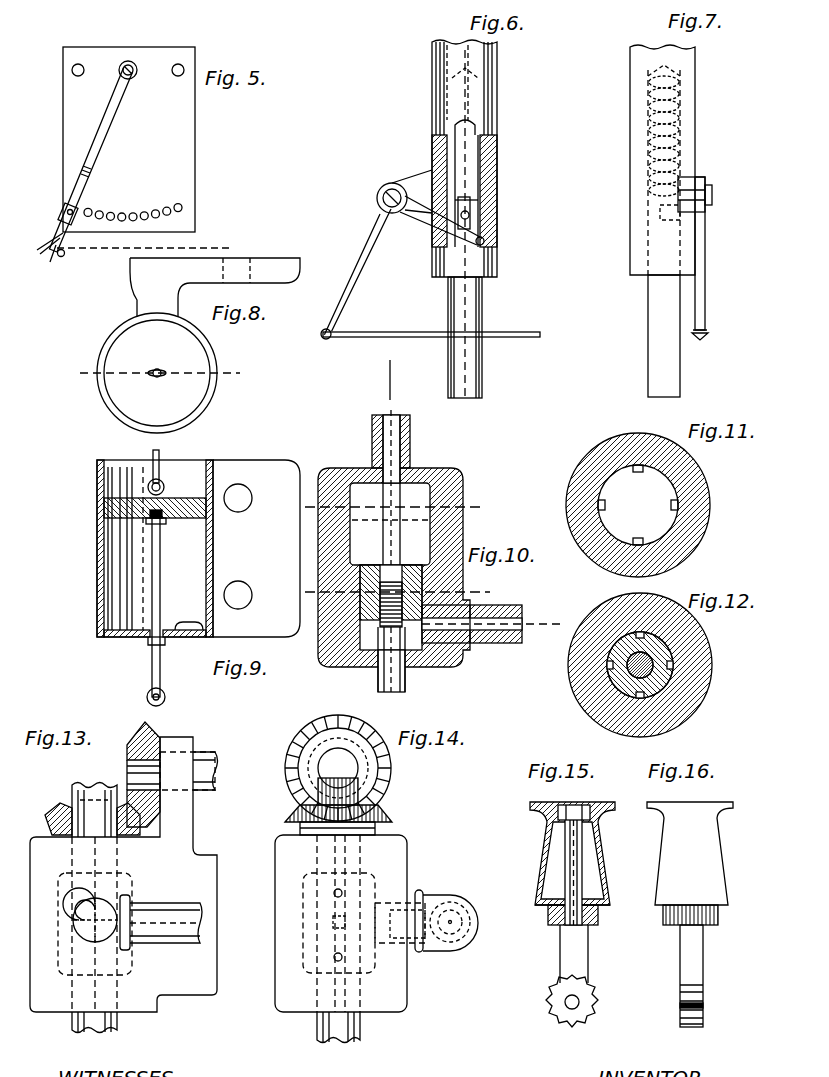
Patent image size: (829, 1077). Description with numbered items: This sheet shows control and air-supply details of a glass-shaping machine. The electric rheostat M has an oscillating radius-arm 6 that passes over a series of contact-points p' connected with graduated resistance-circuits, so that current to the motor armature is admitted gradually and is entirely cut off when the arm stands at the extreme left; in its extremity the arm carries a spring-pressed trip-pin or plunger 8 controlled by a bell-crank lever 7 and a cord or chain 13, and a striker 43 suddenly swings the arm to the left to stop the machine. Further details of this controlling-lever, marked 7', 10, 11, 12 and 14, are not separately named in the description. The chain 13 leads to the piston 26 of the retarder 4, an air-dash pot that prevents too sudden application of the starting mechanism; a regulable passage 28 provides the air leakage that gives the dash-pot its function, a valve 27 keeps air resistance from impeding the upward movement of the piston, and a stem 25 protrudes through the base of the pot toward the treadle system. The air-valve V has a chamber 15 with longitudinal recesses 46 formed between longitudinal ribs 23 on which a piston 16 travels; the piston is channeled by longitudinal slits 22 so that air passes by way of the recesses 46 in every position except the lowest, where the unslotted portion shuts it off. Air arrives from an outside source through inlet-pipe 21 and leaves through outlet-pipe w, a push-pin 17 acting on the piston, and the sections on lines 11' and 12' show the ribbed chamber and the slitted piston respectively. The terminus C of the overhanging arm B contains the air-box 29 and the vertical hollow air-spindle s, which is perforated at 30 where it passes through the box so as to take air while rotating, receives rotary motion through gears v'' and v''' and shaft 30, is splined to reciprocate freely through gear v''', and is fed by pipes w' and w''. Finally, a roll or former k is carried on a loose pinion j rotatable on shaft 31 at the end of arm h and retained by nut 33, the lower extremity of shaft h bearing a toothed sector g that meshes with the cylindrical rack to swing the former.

In FIG. 8, the retarder 4 is at (190, 345).
In FIG. 9, the retarder 4 is at (198, 552).
In FIG. 5, the radius-arm 6 is at (98, 133).
In FIG. 5, the bell-crank lever 7 is at (46, 232).
In FIG. 6, the bell-crank lever 7 is at (376, 254).
In FIG. 7, the bell-crank lever 7 is at (709, 258).
In FIG. 6, the link 7' is at (442, 220).
In FIG. 5, the trip-pin or plunger 8 is at (52, 255).
In FIG. 6, the trip-pin or plunger 8 is at (453, 221).
In FIG. 7, the trip-pin or plunger 8 is at (659, 221).
In FIG. 6, the pin 10 is at (485, 230).
In FIG. 6, the block 11 is at (491, 202).
In FIG. 7, the block 11 is at (702, 201).
In FIG. 7, the spring 12 is at (685, 130).
In FIG. 5, the cord or chain 13 is at (161, 239).
In FIG. 6, the cord or chain 13 is at (431, 321).
In FIG. 9, the cord or chain 13 is at (168, 460).
In FIG. 5, the tube 14 is at (72, 214).
In FIG. 6, the tube 14 is at (480, 158).
In FIG. 10, the chamber 15 is at (405, 507).
In FIG. 11, the chamber 15 is at (638, 505).
In FIG. 10, the piston 16 is at (402, 598).
In FIG. 12, the piston 16 is at (620, 680).
In FIG. 10, the push-pin 17 is at (410, 659).
In FIG. 10, the inlet-pipe 21 is at (491, 636).
In FIG. 12, the longitudinal slits 22 is at (668, 668).
In FIG. 10, the longitudinal ribs 23 is at (391, 585).
In FIG. 11, the longitudinal ribs 23 is at (614, 505).
In FIG. 9, the stem 25 is at (142, 612).
In FIG. 9, the piston 26 is at (97, 514).
In FIG. 9, the valve 27 is at (189, 615).
In FIG. 9, the passage 28 is at (175, 486).
In FIG. 13, the air-box 29 is at (62, 950).
In FIG. 14, the air-box 29 is at (315, 923).
In FIG. 13, the shaft 30 is at (20, 884).
In FIG. 14, the shaft 30 is at (334, 893).
In FIG. 15, the shaft 31 is at (582, 845).
In FIG. 15, the nut 33 is at (580, 802).
In FIG. 5, the striker 43 is at (64, 256).
In FIG. 10, the longitudinal recesses 46 is at (390, 505).
In FIG. 11, the longitudinal recesses 46 is at (638, 505).
In FIG. 10, the section line 11' is at (403, 514).
In FIG. 10, the section line 12' is at (405, 589).
In FIG. 5, the electric rheostat M is at (142, 139).
In FIG. 5, the contact-points p' is at (133, 203).
In FIG. 10, the air-valve V is at (403, 567).
In FIG. 11, the air-valve V is at (649, 505).
In FIG. 12, the air-valve V is at (650, 665).
In FIG. 10, the pipe w is at (403, 462).
In FIG. 13, the pipe w' is at (161, 916).
In FIG. 14, the pipe w' is at (446, 915).
In FIG. 14, the pipe w'' is at (409, 904).
In FIG. 13, the overhanging arm B is at (123, 874).
In FIG. 14, the terminus of overhanging arm C is at (280, 853).
In FIG. 13, the air-spindle s is at (104, 908).
In FIG. 14, the air-spindle s is at (290, 780).
In FIG. 13, the gear v'' is at (154, 772).
In FIG. 14, the gear v'' is at (329, 768).
In FIG. 13, the gear v''' is at (86, 812).
In FIG. 14, the gear v''' is at (327, 816).
In FIG. 15, the former k is at (567, 853).
In FIG. 16, the former k is at (697, 853).
In FIG. 15, the loose pinion j is at (561, 917).
In FIG. 16, the loose pinion j is at (679, 917).
In FIG. 15, the shaft h is at (585, 957).
In FIG. 16, the shaft h is at (695, 957).
In FIG. 15, the toothed sector g is at (564, 1001).
In FIG. 16, the toothed sector g is at (680, 1005).